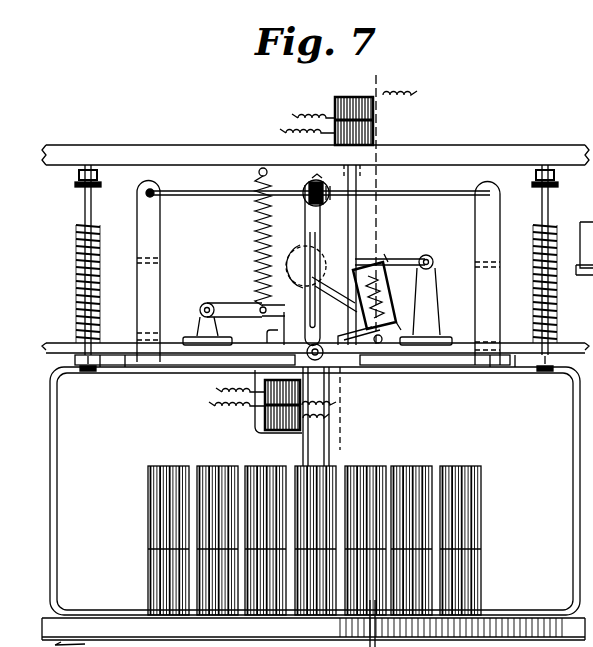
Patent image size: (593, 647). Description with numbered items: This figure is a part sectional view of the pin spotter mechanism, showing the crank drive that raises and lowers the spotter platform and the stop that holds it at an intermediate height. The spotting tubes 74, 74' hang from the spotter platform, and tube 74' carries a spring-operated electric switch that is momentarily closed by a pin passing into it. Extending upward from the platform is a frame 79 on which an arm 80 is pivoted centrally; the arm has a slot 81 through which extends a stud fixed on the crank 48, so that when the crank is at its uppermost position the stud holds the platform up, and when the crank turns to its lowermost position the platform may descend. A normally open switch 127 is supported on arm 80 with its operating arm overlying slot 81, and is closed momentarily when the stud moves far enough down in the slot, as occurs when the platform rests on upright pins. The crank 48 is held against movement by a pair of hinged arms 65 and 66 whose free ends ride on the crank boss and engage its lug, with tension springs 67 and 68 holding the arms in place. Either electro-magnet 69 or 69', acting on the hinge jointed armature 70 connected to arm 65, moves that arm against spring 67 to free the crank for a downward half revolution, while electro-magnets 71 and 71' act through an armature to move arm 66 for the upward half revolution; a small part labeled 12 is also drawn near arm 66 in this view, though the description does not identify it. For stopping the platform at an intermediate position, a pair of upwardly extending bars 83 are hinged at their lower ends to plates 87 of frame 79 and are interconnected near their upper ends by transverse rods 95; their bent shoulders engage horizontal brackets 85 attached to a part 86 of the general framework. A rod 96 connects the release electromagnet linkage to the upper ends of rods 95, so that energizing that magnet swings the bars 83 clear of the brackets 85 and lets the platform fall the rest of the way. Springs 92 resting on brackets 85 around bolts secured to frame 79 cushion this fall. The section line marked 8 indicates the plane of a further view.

The section line 8 is at (395, 79).
The electro-magnet 69 is at (354, 118).
The electro-magnet 69' is at (346, 135).
The hinge jointed armature 70 is at (360, 182).
The transverse rods 95 is at (206, 197).
The upwardly extending bars 83 is at (160, 220).
The springs 92 is at (75, 262).
The tension spring 68 is at (255, 237).
The arm 80 is at (305, 213).
The slot 81 is at (306, 185).
The rod 96 is at (328, 172).
The crank 48 is at (299, 261).
The hinged arm 65 is at (414, 260).
The switch 127 is at (383, 266).
The tension spring 67 is at (383, 337).
The hinged arm 66 is at (241, 306).
The rod 12 is at (284, 326).
The horizontal brackets 85 is at (160, 346).
The part of the general framework 86 is at (585, 346).
The frame 79 is at (340, 430).
The plates 87 is at (152, 366).
The electro-magnet 71 is at (313, 401).
The electro-magnet 71' is at (236, 405).
The spotting tubes 74 is at (309, 527).
The spotting tube 74' is at (216, 527).